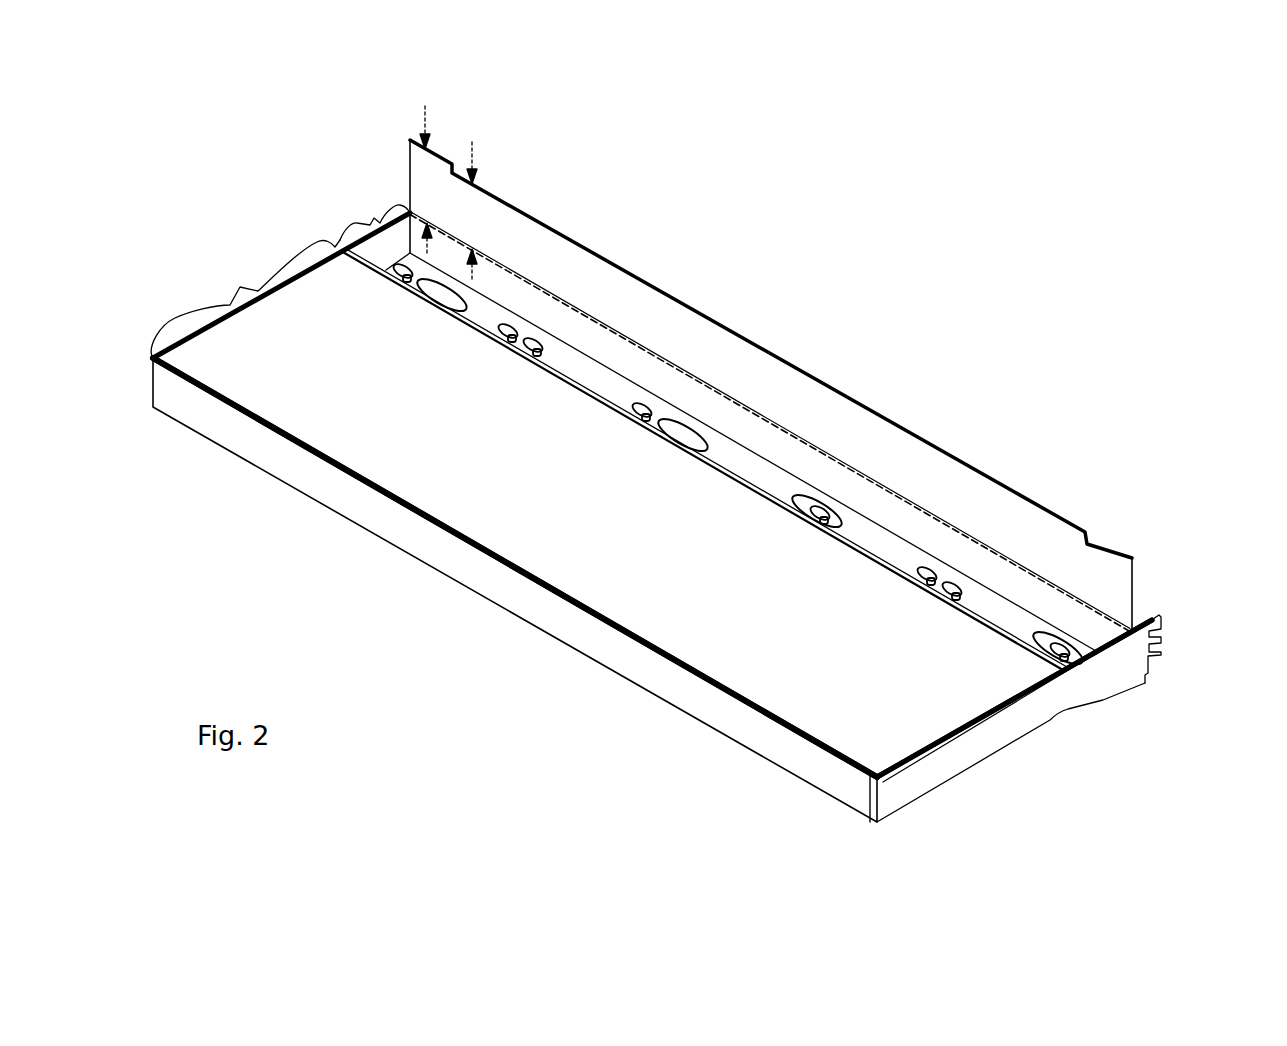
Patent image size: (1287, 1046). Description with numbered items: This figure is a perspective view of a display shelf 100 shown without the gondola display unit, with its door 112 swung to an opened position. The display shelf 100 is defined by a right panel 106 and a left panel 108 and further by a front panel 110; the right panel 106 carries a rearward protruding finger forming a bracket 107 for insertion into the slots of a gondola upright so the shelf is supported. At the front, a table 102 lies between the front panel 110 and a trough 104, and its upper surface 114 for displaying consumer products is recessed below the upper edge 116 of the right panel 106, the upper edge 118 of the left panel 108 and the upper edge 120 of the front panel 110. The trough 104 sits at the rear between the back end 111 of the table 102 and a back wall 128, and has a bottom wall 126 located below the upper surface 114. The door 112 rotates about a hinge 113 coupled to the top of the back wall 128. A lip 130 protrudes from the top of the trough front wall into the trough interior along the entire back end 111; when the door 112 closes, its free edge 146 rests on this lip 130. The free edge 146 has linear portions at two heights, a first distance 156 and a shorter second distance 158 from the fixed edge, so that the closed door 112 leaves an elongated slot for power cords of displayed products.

The display shelf 100 is at (880, 217).
The table 102 is at (245, 298).
The trough 104 is at (375, 219).
The right panel 106 is at (983, 740).
The bracket 107 is at (1185, 655).
The left panel 108 is at (371, 253).
The front panel 110 is at (620, 645).
The back end of table 111 is at (660, 437).
The door 112 is at (1153, 590).
The hinge 113 is at (723, 393).
The upper surface 114 is at (467, 503).
The upper edge of right side panel 116 is at (933, 744).
The upper edge of left side panel 118 is at (268, 297).
The upper edge of front panel 120 is at (577, 598).
The bottom wall 126 is at (762, 477).
The back wall 128 is at (932, 535).
The lip 130 is at (562, 372).
The free edge 146 is at (876, 402).
The first distance 156 is at (444, 154).
The second distance 158 is at (463, 244).